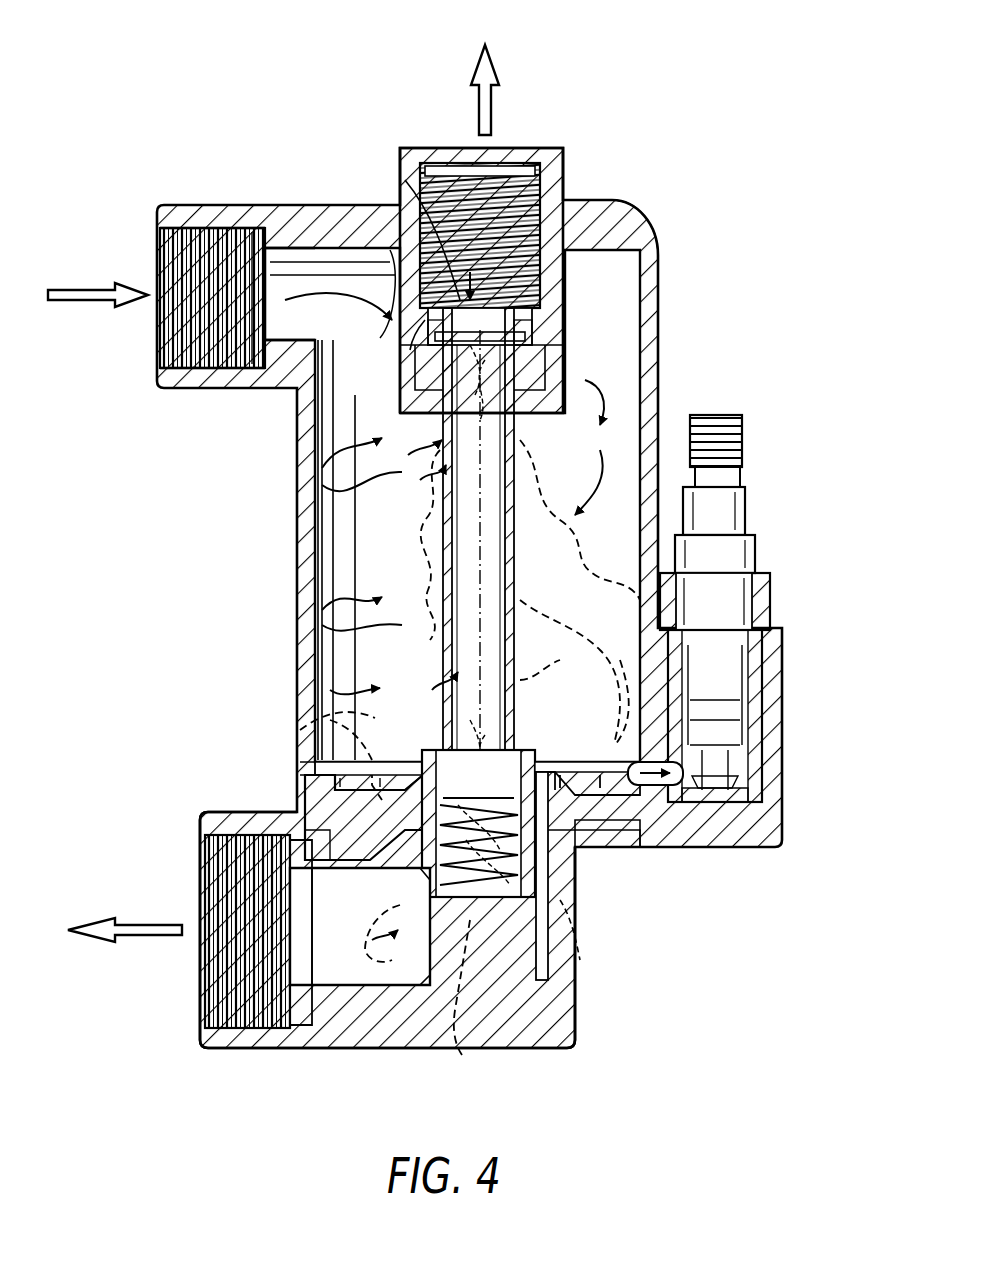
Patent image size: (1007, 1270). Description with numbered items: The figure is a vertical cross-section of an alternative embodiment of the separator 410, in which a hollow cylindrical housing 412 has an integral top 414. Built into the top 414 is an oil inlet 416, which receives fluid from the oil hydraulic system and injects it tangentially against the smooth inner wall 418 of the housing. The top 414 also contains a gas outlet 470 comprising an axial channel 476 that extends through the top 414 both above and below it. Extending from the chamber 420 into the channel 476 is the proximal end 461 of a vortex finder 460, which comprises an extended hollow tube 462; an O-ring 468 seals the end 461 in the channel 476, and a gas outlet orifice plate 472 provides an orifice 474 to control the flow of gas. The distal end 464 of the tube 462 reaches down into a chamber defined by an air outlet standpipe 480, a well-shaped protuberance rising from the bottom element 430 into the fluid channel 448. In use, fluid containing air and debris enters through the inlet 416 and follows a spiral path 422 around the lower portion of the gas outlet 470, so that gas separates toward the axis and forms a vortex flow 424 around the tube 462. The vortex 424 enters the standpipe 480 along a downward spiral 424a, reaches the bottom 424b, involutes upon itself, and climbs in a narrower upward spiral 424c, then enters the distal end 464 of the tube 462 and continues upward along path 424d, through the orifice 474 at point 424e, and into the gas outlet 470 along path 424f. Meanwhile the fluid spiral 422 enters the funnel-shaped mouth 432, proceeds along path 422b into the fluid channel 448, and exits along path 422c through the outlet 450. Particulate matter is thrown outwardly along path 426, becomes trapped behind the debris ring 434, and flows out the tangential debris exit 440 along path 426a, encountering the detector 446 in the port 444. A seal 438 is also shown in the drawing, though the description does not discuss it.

The separator 410 is at (728, 165).
The hollow cylindrical housing 412 is at (662, 332).
The top 414 is at (248, 205).
The oil inlet 416 is at (157, 342).
The smooth inner wall 418 is at (318, 425).
The chamber 420 is at (645, 280).
The spiral path 422 is at (360, 298).
The path 422b is at (370, 900).
The path 422c is at (332, 1005).
The vortex flow 424 is at (499, 540).
The downwards spiral 424a is at (374, 942).
The bottom of the gas vortex 424b is at (480, 1045).
The upwardly flowing spiral 424c is at (415, 785).
The path 424d is at (630, 640).
The point 424e is at (440, 350).
The path 424f is at (408, 185).
The path 426 is at (300, 690).
The path 426a is at (587, 702).
The bottom element 430 is at (578, 1030).
The funnel-shaped mouth 432 is at (572, 850).
The debris ring 434 is at (318, 795).
The seal 438 is at (318, 755).
The tangential debris exit 440 is at (680, 810).
The port 444 is at (752, 782).
The detector 446 is at (745, 560).
The fluid channel 448 is at (548, 965).
The outlet 450 is at (205, 1008).
The vortex finder 460 is at (442, 480).
The proximal end 461 is at (552, 240).
The hollow tube 462 is at (442, 642).
The distal end 464 is at (525, 800).
The O-ring 468 is at (520, 398).
The gas outlet 470 is at (432, 163).
The gas outlet orifice plate 472 is at (530, 335).
The orifice 474 is at (395, 318).
The axial channel 476 is at (505, 165).
The air outlet standpipe 480 is at (540, 905).